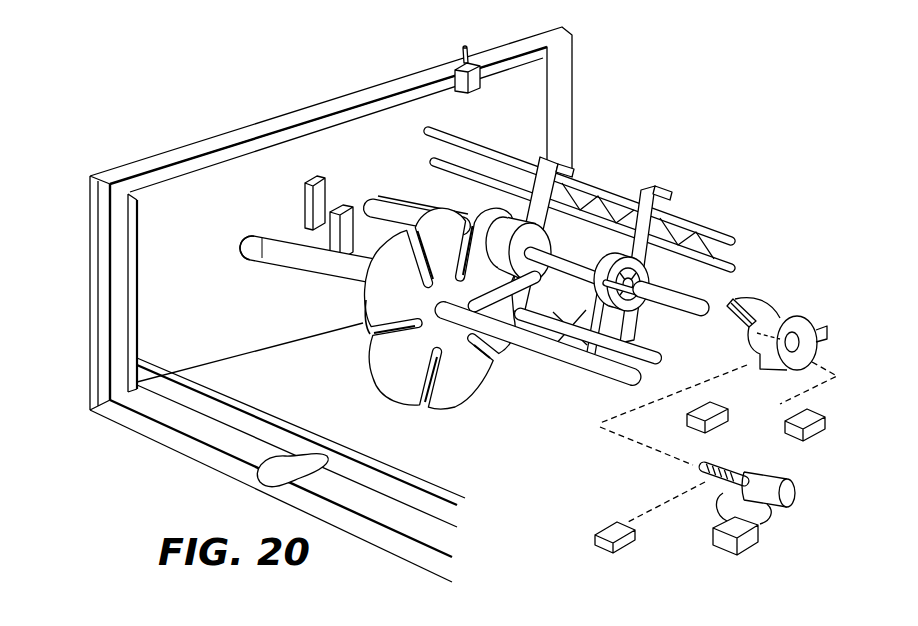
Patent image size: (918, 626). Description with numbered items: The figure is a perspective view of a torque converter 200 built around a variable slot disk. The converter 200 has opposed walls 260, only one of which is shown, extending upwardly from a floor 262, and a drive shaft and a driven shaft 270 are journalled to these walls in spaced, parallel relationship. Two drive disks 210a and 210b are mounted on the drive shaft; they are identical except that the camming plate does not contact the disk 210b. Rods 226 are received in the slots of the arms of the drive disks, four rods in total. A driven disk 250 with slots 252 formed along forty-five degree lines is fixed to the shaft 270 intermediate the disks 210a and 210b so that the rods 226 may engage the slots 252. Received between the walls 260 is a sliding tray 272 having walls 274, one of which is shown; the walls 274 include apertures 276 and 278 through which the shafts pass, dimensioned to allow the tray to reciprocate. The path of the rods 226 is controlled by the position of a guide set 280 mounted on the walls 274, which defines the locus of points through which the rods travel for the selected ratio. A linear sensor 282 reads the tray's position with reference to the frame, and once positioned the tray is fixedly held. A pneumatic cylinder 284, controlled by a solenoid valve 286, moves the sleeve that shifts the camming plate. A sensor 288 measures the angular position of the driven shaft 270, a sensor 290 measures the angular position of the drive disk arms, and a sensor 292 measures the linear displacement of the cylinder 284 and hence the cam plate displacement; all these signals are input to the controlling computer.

The converter 200 is at (295, 319).
The drive disk 210a is at (653, 278).
The drive disk 210b is at (549, 242).
The rods 226 is at (634, 197).
The driven disk 250 is at (392, 373).
The slots 252 is at (375, 342).
The opposed walls 260 is at (196, 142).
The floor 262 is at (402, 560).
The driven shaft 270 is at (307, 263).
The sliding tray 272 is at (205, 418).
The walls 274 is at (250, 334).
The aperture 276 is at (250, 242).
The aperture 278 is at (370, 202).
The guide set 280 is at (326, 195).
The linear sensor 282 is at (458, 69).
The pneumatic cylinder 284 is at (788, 495).
The solenoid valve 286 is at (750, 541).
The sensor 288 is at (721, 420).
The sensor 290 is at (825, 423).
The sensor 292 is at (622, 550).